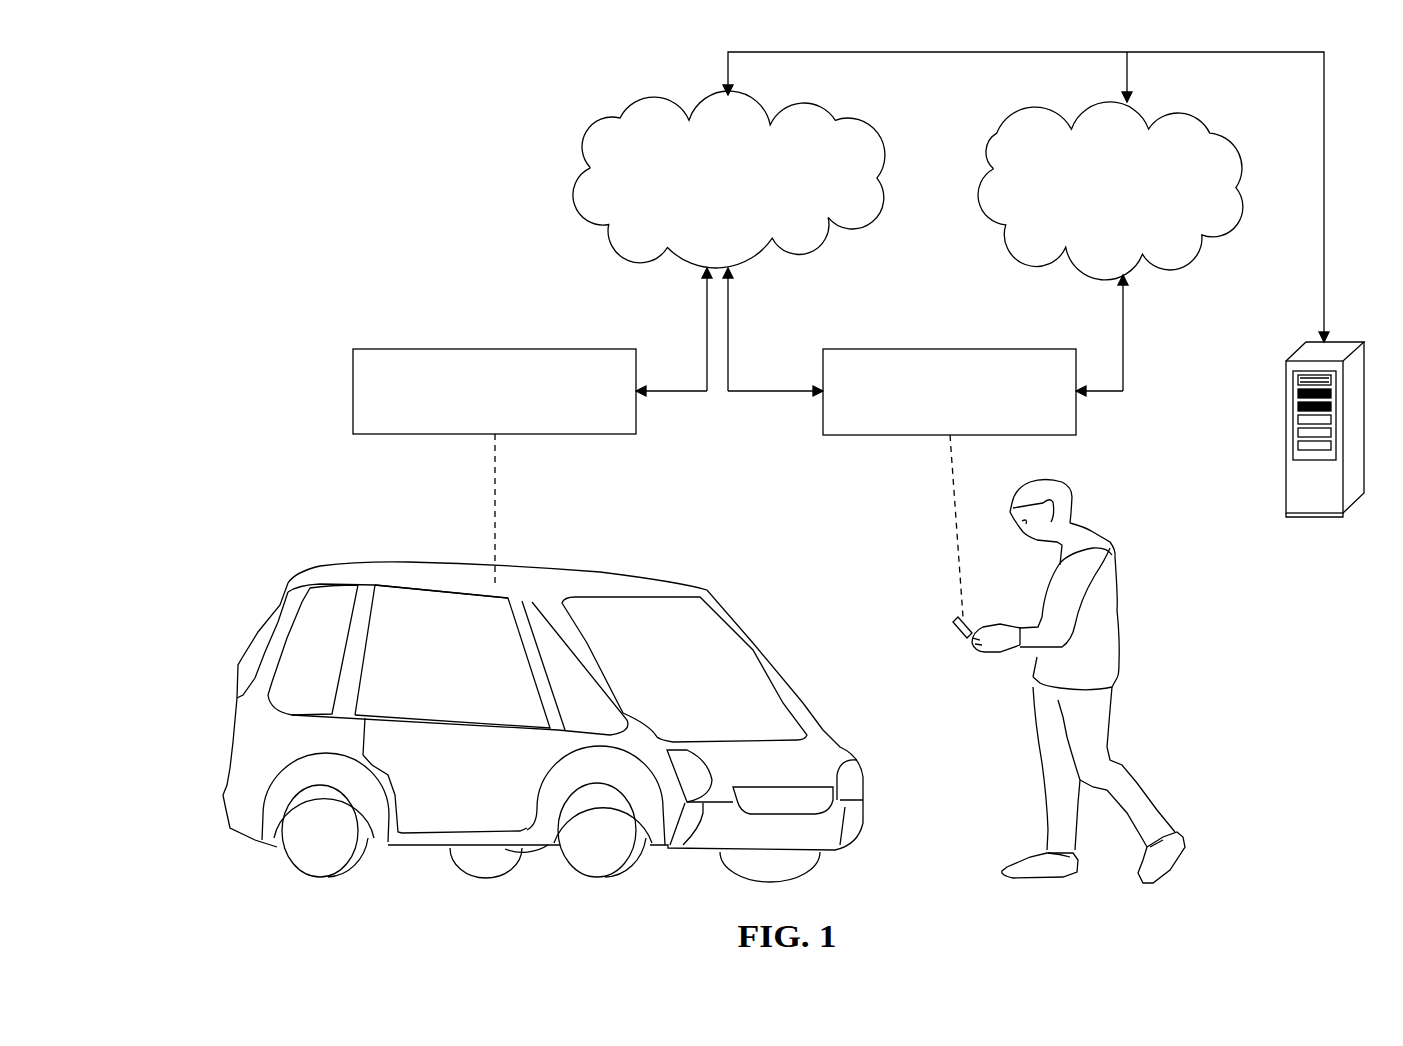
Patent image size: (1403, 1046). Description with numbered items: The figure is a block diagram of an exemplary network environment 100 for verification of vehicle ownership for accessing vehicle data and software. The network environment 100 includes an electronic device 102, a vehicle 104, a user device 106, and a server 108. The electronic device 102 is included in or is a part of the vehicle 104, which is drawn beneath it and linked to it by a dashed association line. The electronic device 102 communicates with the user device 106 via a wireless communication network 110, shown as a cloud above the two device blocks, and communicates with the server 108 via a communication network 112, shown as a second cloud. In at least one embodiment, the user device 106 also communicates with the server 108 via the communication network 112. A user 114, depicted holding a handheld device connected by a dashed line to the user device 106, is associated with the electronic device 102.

The network environment 100 is at (133, 114).
The electronic device 102 is at (607, 406).
The vehicle 104 is at (233, 733).
The user device 106 is at (1033, 406).
The server 108 is at (1286, 429).
The wireless communication network 110 is at (795, 209).
The communication network 112 is at (1177, 217).
The user 114 is at (1120, 650).